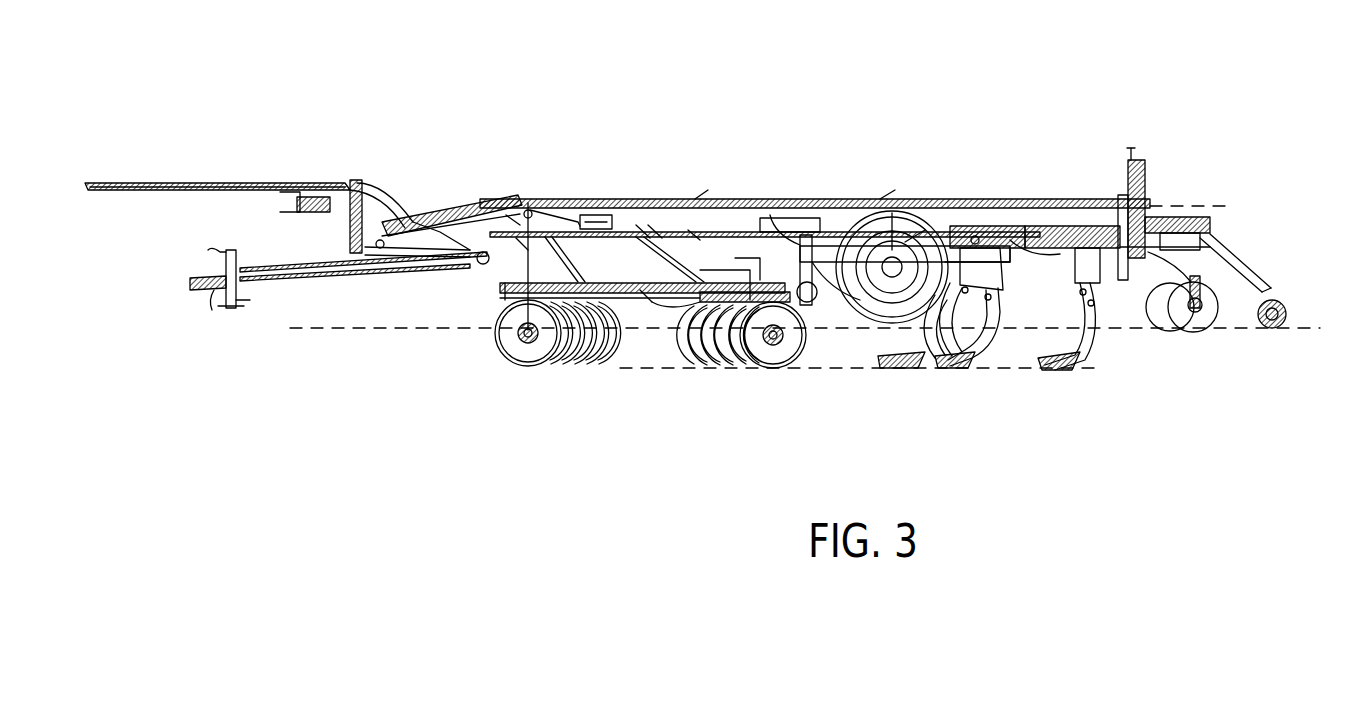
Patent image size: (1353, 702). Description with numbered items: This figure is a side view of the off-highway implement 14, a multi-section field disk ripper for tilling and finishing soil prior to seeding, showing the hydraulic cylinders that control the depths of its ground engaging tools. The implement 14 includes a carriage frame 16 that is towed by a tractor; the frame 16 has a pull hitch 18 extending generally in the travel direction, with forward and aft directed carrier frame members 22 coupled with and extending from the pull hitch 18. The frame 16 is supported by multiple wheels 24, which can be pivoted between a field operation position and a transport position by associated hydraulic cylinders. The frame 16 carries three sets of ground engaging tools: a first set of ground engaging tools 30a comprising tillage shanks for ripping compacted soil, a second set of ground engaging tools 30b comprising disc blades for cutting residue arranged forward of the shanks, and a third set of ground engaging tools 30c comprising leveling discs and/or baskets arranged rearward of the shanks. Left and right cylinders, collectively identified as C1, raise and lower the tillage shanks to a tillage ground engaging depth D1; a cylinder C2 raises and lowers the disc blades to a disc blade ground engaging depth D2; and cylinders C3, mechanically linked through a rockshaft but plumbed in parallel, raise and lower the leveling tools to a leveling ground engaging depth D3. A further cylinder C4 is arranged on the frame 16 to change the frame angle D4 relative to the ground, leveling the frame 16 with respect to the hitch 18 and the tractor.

The off-highway implement 14 is at (214, 88).
The carriage frame 16 is at (411, 172).
The pull hitch 18 is at (280, 270).
The carrier frame members 22 is at (713, 222).
The wheels 24 is at (848, 312).
The first set of ground engaging tools 30a is at (992, 382).
The second set of ground engaging tools 30b is at (701, 392).
The third set of ground engaging tools 30c is at (1170, 352).
The tillage shank hydraulic cylinders C1 is at (888, 214).
The disc blade hydraulic cylinder C2 is at (510, 290).
The leveling hydraulic cylinders C3 is at (1200, 264).
The frame angle hydraulic cylinder C4 is at (380, 250).
The tillage ground engaging depth D1 is at (892, 335).
The disc blade ground engaging depth D2 is at (640, 334).
The leveling ground engaging depth D3 is at (1236, 287).
The frame angle D4 is at (521, 188).